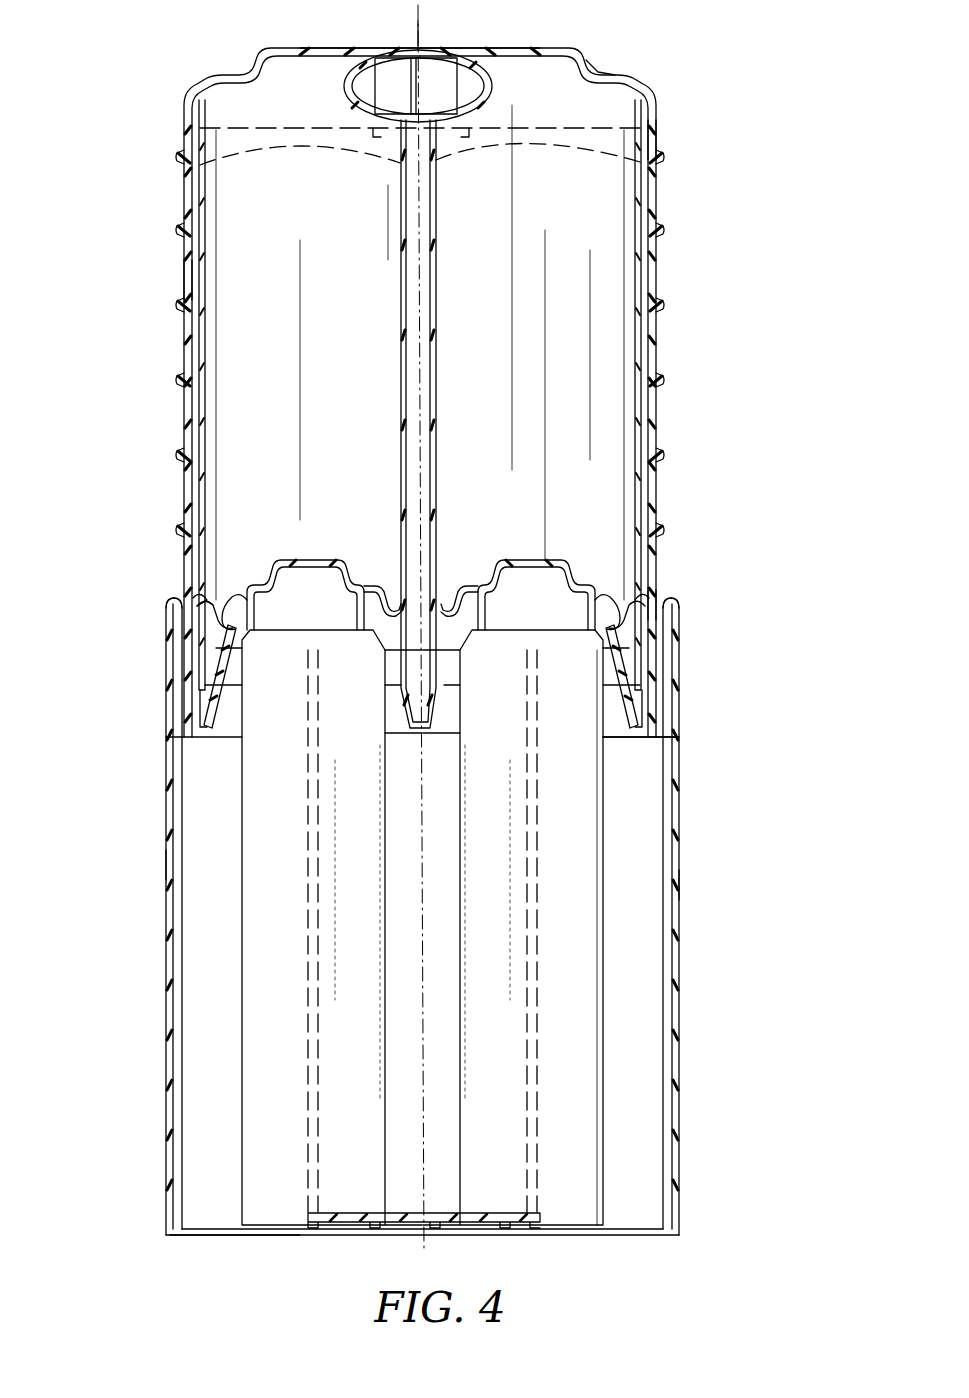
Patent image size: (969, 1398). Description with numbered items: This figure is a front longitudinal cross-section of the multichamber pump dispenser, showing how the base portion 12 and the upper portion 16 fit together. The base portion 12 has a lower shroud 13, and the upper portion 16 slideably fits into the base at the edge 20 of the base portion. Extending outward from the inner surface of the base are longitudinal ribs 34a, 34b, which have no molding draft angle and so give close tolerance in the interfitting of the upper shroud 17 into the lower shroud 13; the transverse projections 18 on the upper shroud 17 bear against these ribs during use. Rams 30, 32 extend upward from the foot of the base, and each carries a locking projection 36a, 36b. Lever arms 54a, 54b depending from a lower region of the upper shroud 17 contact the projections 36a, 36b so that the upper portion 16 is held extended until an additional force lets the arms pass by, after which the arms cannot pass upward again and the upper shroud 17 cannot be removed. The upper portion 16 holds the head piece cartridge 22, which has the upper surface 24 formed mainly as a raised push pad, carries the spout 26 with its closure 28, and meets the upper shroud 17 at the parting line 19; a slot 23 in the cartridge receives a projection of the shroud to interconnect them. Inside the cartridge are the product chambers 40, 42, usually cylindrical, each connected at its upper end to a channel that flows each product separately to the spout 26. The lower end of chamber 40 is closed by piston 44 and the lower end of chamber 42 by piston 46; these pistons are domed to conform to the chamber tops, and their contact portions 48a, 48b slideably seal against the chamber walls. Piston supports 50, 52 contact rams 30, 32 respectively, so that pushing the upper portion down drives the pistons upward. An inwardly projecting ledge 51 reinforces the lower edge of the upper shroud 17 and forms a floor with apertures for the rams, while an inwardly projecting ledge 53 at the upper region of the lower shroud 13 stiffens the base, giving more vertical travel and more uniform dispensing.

The base portion 12 is at (686, 1149).
The lower shroud 13 is at (170, 1098).
The upper portion 16 is at (668, 357).
The upper shroud 17 is at (184, 282).
The transverse projections 18 is at (184, 157).
The parting line 19 is at (597, 153).
The edge of the base portion 20 is at (670, 594).
The head piece cartridge 22 is at (652, 108).
The slot 23 is at (378, 133).
The upper surface 24 is at (517, 47).
The spout 26 is at (460, 48).
The closure 28 is at (653, 138).
The ram 30 is at (605, 827).
The ram 32 is at (242, 802).
The longitudinal rib 34a is at (668, 892).
The longitudinal rib 34b is at (177, 865).
The locking projection 36a is at (660, 622).
The locking projection 36b is at (212, 627).
The product chamber 40 is at (583, 327).
The product chamber 42 is at (233, 220).
The piston 44 is at (600, 560).
The piston 46 is at (208, 613).
The contact portion 48a is at (668, 607).
The contact portion 48b is at (180, 615).
The piston support 50 is at (517, 600).
The inwardly projecting ledge 51 is at (655, 730).
The piston support 52 is at (340, 602).
The inwardly projecting ledge 53 is at (213, 610).
The lever arm 54a is at (605, 660).
The lever arm 54b is at (210, 665).